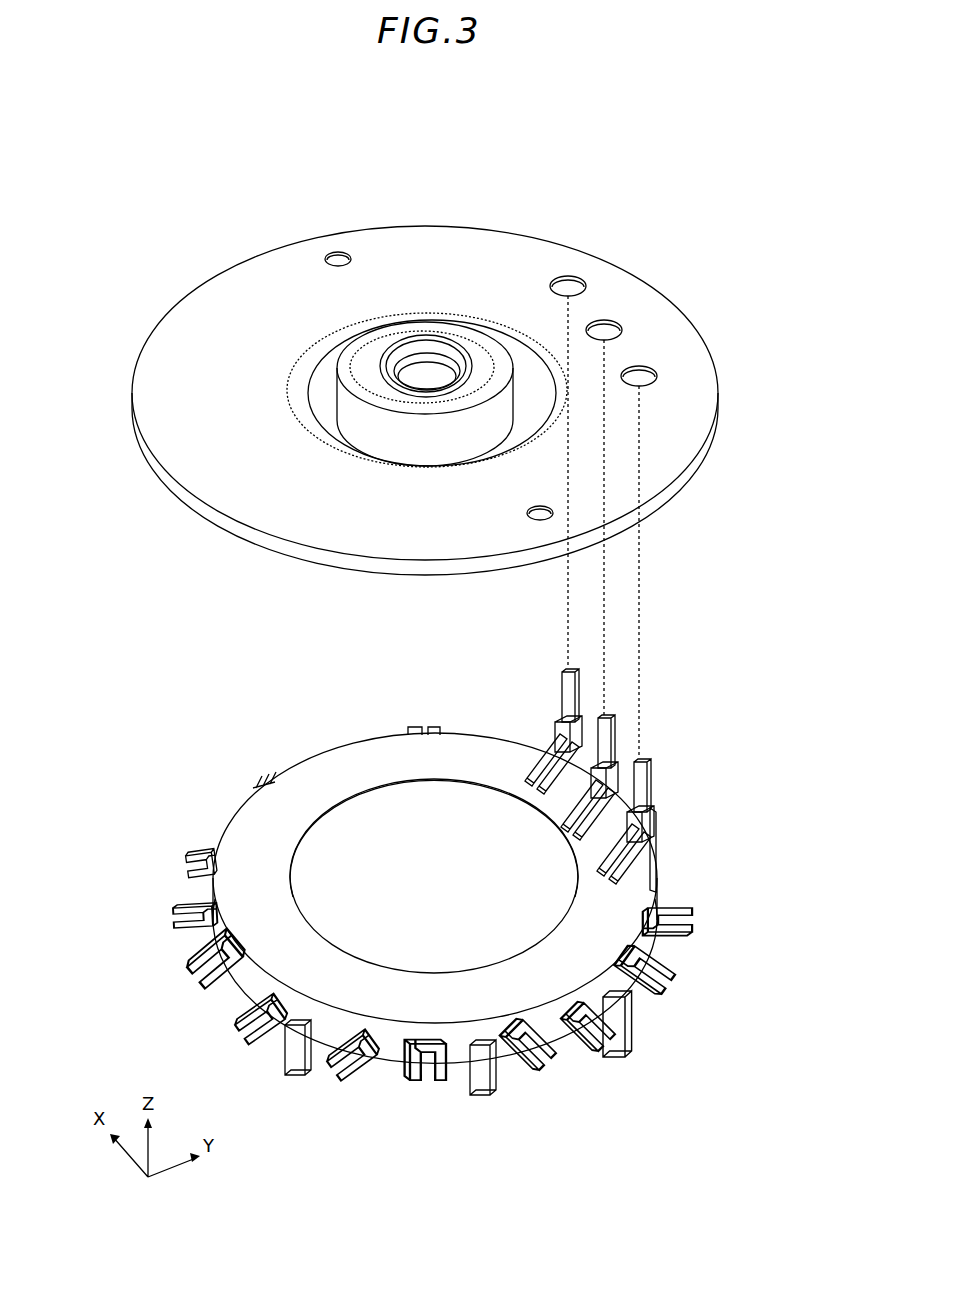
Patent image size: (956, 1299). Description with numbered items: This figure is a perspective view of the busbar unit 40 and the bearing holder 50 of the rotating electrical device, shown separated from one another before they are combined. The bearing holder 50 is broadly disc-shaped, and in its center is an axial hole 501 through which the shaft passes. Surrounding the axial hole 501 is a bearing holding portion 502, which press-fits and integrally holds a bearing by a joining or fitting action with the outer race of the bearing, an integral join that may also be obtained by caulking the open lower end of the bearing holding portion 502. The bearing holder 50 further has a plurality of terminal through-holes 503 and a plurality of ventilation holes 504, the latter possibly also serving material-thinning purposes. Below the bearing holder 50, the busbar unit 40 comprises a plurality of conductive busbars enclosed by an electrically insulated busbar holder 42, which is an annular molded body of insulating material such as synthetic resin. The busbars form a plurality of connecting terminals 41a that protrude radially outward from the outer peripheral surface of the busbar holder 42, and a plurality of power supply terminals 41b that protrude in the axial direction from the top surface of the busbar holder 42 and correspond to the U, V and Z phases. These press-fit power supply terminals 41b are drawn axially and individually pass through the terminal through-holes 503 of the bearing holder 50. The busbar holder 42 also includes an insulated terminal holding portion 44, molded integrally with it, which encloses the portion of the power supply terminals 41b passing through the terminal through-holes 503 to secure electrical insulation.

The bearing holder 50 is at (433, 420).
The axial hole 501 is at (425, 370).
The bearing holding portion 502 is at (468, 438).
The terminal through-holes 503 is at (572, 283).
The ventilation holes 504 is at (338, 252).
The busbar unit 40 is at (436, 877).
The busbar holder 42 is at (335, 749).
The connecting terminals 41a is at (187, 866).
The power supply terminals 41b is at (572, 683).
The insulated terminal holding portion 44 is at (662, 824).